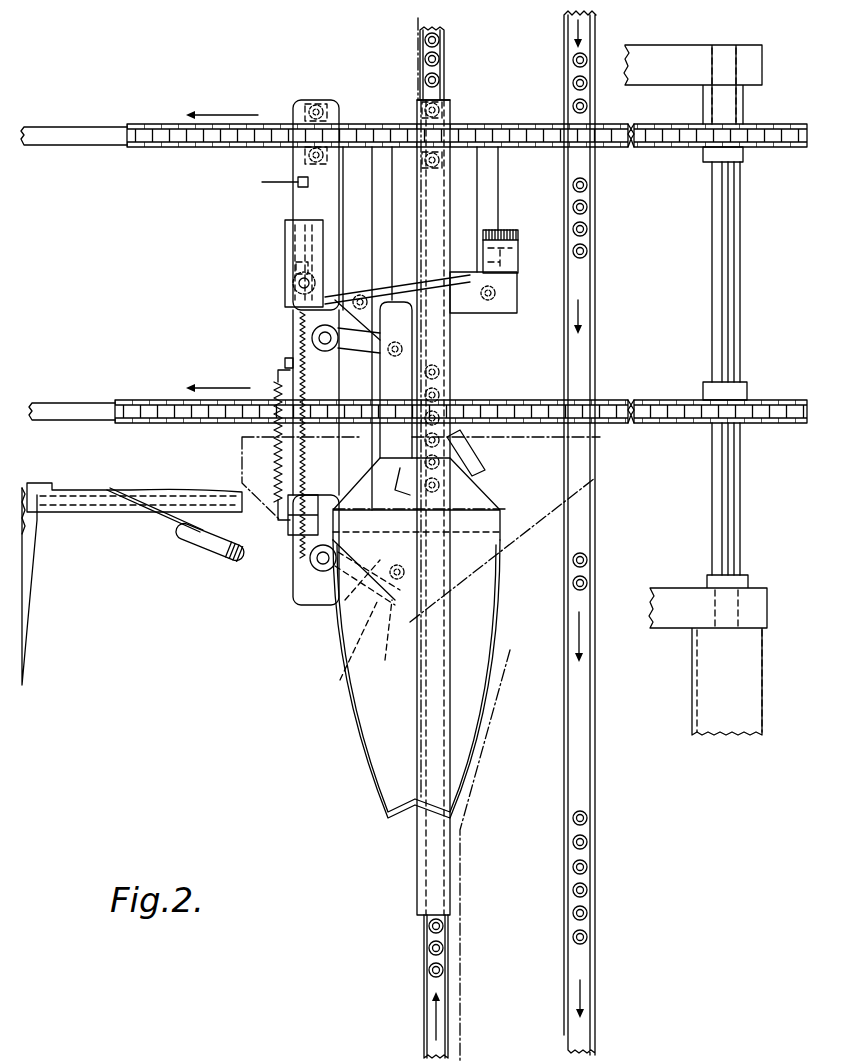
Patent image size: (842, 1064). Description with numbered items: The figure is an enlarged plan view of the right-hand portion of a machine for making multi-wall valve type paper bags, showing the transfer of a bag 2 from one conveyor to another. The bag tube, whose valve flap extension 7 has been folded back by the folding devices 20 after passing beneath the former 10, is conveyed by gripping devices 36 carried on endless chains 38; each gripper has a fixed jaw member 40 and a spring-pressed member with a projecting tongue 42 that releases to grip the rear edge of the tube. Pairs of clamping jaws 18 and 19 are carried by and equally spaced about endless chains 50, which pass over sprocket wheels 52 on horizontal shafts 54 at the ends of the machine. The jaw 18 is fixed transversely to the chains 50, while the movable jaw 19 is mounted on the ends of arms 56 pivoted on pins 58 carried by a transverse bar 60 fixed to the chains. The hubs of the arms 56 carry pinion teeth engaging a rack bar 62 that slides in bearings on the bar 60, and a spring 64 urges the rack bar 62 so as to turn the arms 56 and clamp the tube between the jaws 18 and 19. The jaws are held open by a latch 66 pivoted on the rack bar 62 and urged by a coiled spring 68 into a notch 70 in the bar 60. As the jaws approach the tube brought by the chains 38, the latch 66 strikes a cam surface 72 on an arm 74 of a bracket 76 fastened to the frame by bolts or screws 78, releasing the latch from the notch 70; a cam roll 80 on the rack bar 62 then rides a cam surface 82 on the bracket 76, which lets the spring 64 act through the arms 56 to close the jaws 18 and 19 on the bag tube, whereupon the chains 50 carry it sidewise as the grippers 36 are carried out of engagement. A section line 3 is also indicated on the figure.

The bag 2 is at (28, 636).
The section line 3 is at (427, 18).
The flap extension 7 is at (490, 530).
The former 10 is at (536, 540).
The clamping jaw 18 is at (450, 106).
The clamping jaw 19 is at (388, 442).
The folding devices 20 is at (200, 538).
The gripping devices 36 is at (454, 434).
The endless chains 38 is at (575, 40).
The fixed jaw member 40 is at (470, 502).
The projecting tongue 42 is at (478, 455).
The endless chains 50 is at (135, 148).
The sprocket wheels 52 is at (742, 155).
The horizontal shafts 54 is at (740, 252).
The arms 56 is at (318, 334).
The pins 58 is at (330, 345).
The transverse bar 60 is at (314, 100).
The rack bar 62 is at (312, 338).
The spring 64 is at (286, 380).
The latch 66 is at (285, 212).
The coiled spring 68 is at (294, 266).
The notch 70 is at (276, 181).
The cam surface 72 is at (510, 230).
The arm 74 is at (512, 262).
The bracket 76 is at (515, 313).
The bolts or screws 78 is at (357, 296).
The cam roll 80 is at (293, 283).
The cam surface 82 is at (383, 282).